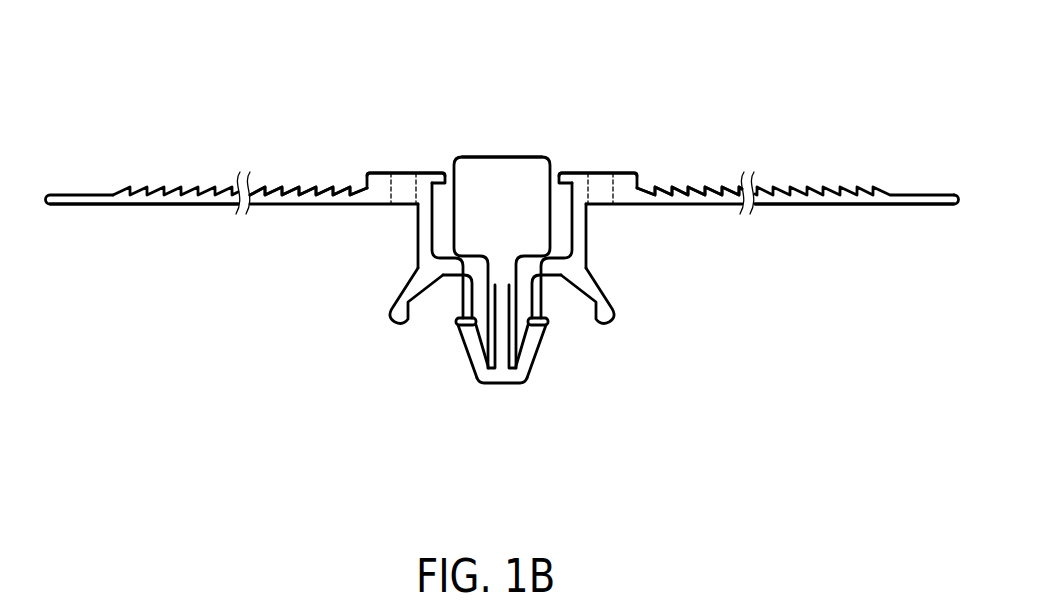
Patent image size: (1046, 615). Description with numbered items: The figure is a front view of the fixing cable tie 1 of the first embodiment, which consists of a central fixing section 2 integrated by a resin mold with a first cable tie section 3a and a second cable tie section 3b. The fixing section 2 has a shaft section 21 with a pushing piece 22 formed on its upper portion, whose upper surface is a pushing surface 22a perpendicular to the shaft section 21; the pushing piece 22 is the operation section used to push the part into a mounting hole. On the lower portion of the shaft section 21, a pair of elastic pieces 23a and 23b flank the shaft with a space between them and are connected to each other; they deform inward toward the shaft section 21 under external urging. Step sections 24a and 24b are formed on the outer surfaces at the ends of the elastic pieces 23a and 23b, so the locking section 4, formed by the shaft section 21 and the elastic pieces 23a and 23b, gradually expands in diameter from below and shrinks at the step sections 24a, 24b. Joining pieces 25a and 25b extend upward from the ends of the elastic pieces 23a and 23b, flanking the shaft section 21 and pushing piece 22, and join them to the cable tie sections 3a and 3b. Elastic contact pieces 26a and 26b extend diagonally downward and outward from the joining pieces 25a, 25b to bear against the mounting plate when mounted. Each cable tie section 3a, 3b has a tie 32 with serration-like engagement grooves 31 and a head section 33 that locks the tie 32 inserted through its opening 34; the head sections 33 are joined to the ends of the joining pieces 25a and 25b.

The fixing cable tie 1 is at (646, 39).
The fixing section 2 is at (512, 60).
The first cable tie section 3a is at (744, 72).
The second cable tie section 3b is at (277, 70).
The locking section 4 is at (637, 350).
The shaft section 21 is at (507, 337).
The pushing piece 22 is at (503, 178).
The pushing surface 22a is at (475, 158).
The elastic piece 23a is at (530, 360).
The elastic piece 23b is at (472, 343).
The step section 24a is at (550, 325).
The step section 24b is at (455, 323).
The joining piece 25a is at (587, 250).
The joining piece 25b is at (418, 240).
The contact piece 26a is at (612, 310).
The contact piece 26b is at (392, 315).
The engagement grooves 31 is at (293, 188).
The tie 32 is at (151, 204).
The head section 33 is at (382, 172).
The opening 34 is at (392, 198).